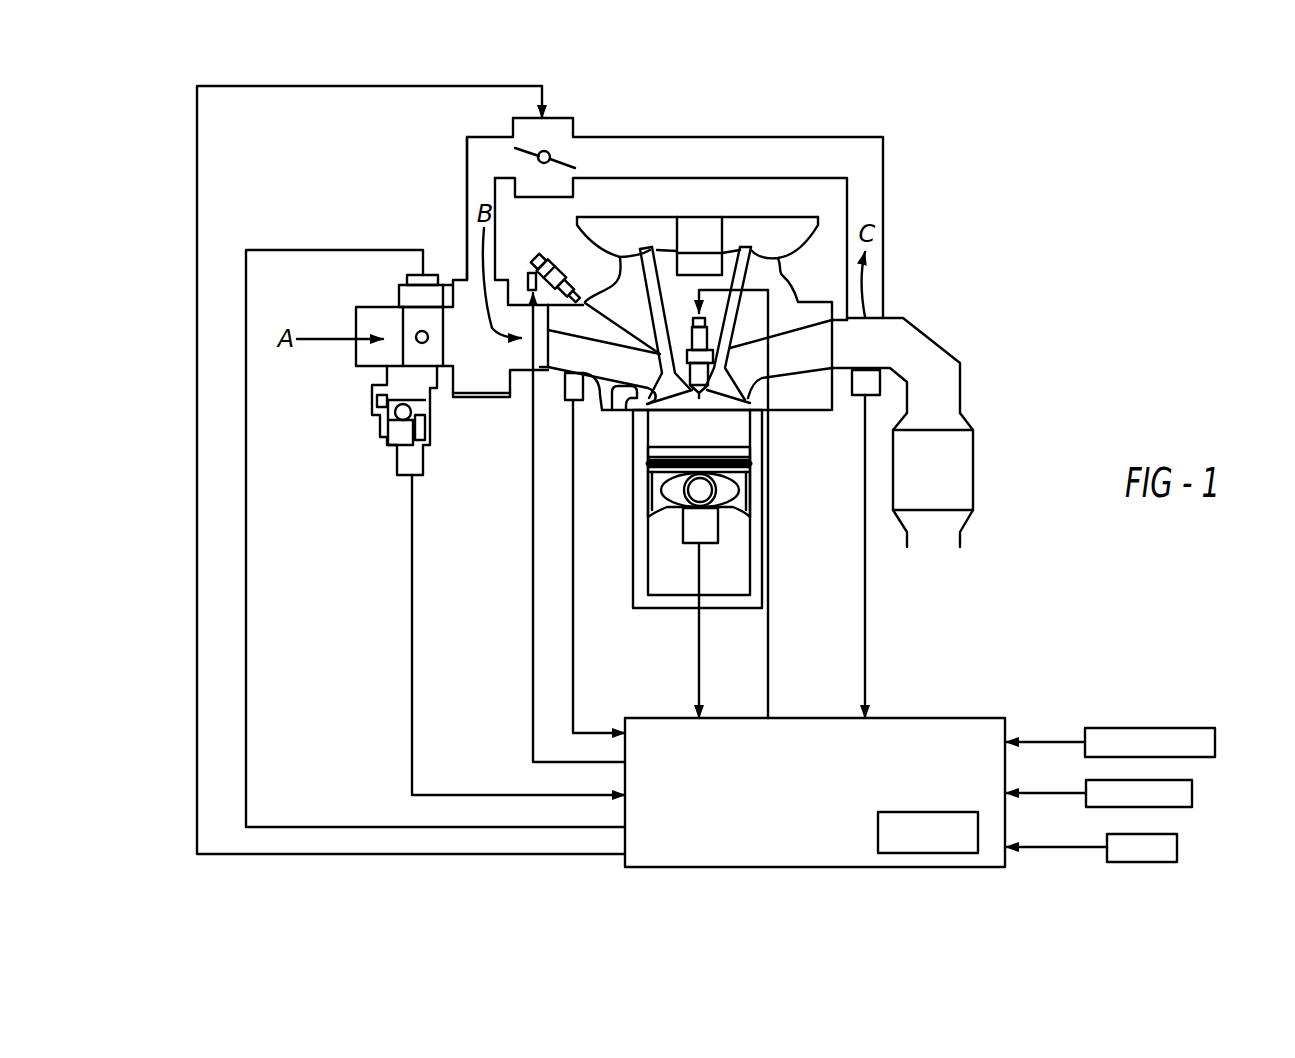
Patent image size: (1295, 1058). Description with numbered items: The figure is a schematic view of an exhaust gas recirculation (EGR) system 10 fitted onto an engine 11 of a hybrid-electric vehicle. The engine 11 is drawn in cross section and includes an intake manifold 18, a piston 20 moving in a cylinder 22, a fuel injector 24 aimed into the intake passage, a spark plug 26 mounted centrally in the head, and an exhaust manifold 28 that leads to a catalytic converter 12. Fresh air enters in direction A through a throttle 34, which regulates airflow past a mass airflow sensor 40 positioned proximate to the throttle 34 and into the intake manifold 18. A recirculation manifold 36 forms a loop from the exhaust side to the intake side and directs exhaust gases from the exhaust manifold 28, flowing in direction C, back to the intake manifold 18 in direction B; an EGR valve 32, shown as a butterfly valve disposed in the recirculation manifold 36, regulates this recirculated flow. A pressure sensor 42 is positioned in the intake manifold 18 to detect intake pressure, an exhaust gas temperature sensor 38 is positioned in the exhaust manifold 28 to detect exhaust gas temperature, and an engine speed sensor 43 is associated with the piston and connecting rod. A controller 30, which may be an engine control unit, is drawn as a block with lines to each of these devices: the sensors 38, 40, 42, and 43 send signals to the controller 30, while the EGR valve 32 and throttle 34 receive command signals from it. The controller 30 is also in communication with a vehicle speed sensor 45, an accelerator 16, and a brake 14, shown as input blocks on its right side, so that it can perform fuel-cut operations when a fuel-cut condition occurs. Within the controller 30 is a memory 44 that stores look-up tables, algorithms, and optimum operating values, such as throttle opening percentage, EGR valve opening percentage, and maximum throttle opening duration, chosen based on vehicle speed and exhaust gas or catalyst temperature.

The exhaust gas recirculation system 10 is at (1004, 162).
The engine 11 is at (508, 428).
The catalytic converter 12 is at (948, 472).
The brake 14 is at (1160, 862).
The accelerator 16 is at (1192, 794).
The intake manifold 18 is at (582, 348).
The piston 20 is at (750, 495).
The cylinder 22 is at (635, 535).
The fuel injector 24 is at (527, 274).
The spark plug 26 is at (682, 330).
The exhaust manifold 28 is at (822, 360).
The controller 30 is at (693, 848).
The EGR valve 32 is at (573, 127).
The throttle 34 is at (422, 322).
The recirculation manifold 36 is at (787, 155).
The exhaust gas temperature sensor 38 is at (855, 397).
The mass airflow sensor 40 is at (397, 460).
The pressure sensor 42 is at (580, 402).
The engine speed sensor 43 is at (720, 523).
The memory 44 is at (922, 853).
The vehicle speed sensor 45 is at (1215, 740).